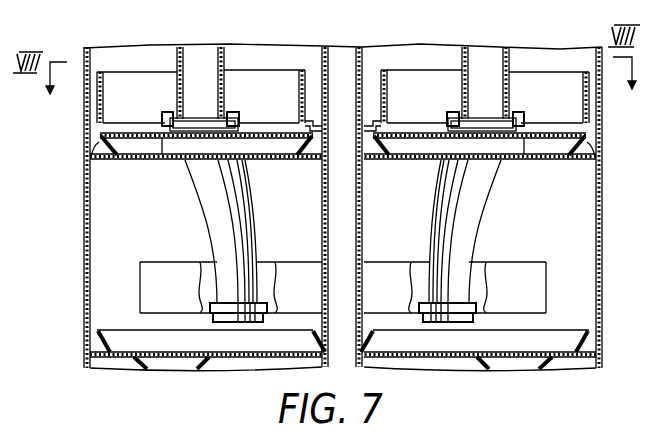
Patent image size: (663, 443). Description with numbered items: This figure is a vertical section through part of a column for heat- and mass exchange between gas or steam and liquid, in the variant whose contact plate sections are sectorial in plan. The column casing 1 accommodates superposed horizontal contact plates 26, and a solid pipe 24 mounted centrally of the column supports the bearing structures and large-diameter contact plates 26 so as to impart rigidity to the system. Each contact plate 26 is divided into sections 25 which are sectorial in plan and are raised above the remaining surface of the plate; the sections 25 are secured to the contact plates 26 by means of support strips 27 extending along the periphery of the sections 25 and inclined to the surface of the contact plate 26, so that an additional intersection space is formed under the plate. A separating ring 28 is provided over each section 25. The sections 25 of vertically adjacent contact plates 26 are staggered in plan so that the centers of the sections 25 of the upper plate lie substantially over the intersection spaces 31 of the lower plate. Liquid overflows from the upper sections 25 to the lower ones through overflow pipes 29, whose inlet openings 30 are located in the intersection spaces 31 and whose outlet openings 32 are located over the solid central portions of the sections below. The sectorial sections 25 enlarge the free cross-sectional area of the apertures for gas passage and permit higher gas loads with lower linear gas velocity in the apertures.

The casing 1 is at (84, 206).
The solid pipe 24 is at (362, 210).
The section 25 is at (125, 128).
The contact plate 26 is at (578, 168).
The support strip 27 is at (130, 158).
The separating ring 28 is at (97, 104).
The overflow pipe 29 is at (199, 187).
The inlet opening 30 is at (162, 369).
The intersection space 31 is at (98, 146).
The outlet opening 32 is at (211, 122).